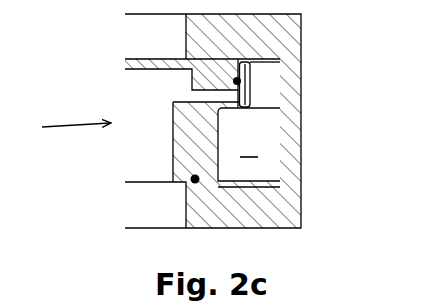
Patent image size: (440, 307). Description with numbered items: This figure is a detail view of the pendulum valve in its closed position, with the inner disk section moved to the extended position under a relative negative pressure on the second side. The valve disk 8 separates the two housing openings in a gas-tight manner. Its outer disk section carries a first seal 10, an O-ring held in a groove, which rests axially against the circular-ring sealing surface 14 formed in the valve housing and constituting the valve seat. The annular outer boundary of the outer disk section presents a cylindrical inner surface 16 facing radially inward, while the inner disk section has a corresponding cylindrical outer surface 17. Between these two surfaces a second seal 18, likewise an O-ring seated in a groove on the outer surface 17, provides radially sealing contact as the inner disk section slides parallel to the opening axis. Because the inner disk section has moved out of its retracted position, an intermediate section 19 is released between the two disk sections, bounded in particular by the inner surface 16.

The valve disk 8 is at (71, 129).
The first seal 10 is at (115, 165).
The sealing surface 14 is at (267, 126).
The inner surface 16 is at (240, 93).
The outer surface 17 is at (323, 83).
The second seal 18 is at (136, 53).
The intermediate section 19 is at (313, 139).